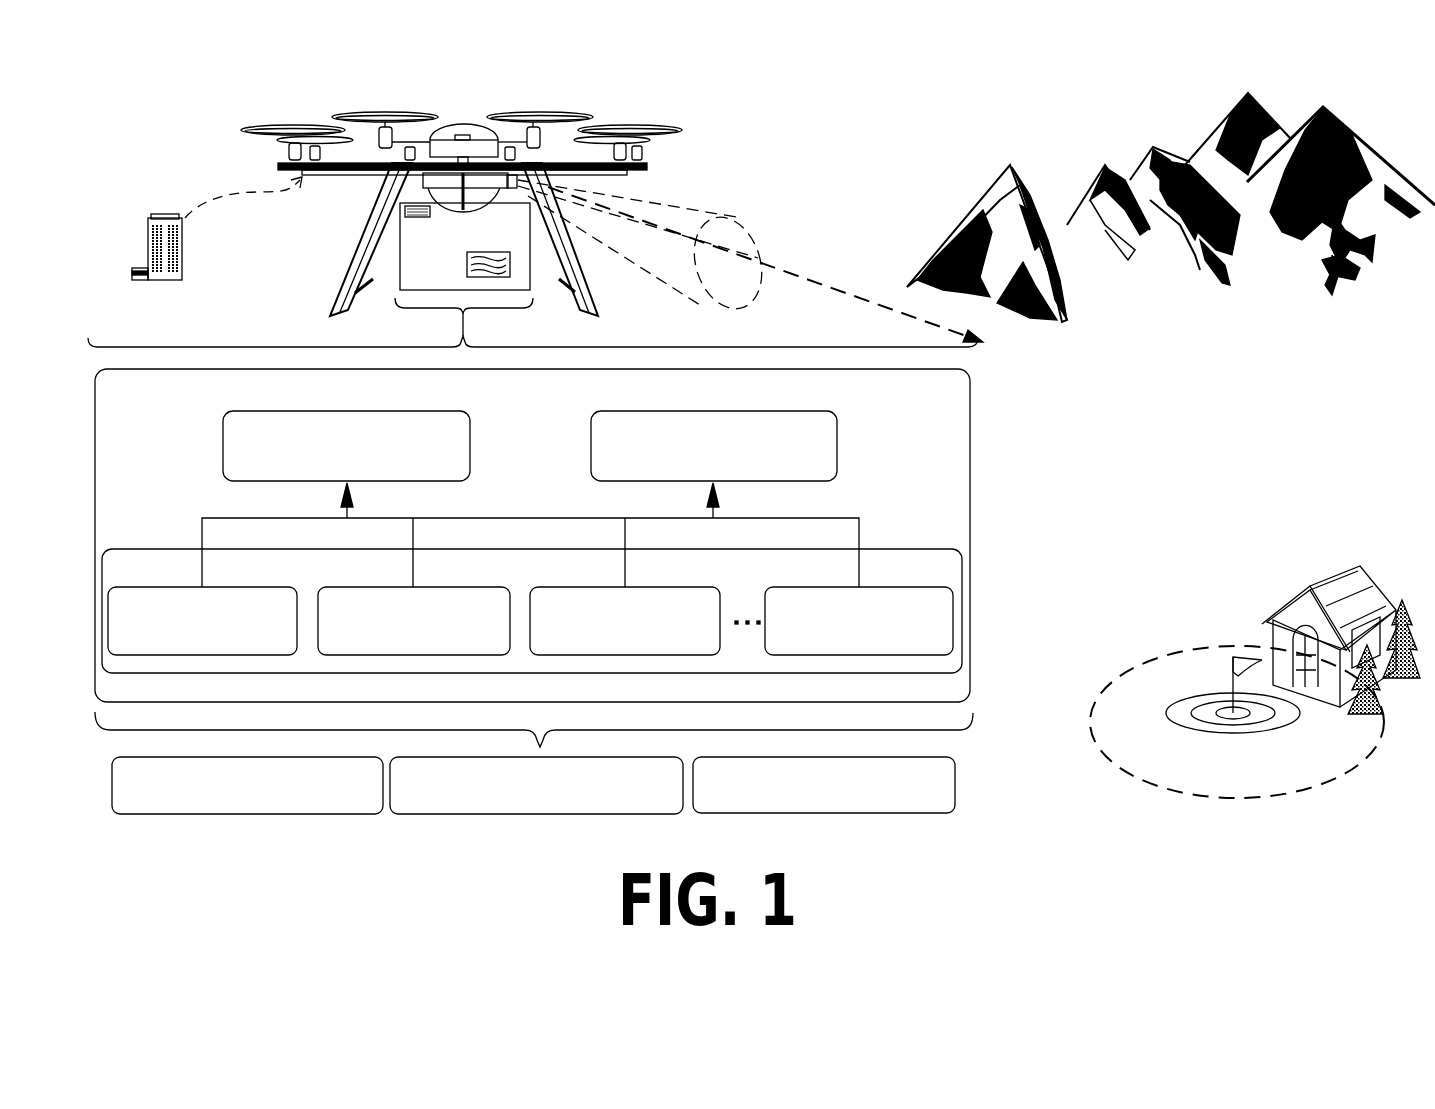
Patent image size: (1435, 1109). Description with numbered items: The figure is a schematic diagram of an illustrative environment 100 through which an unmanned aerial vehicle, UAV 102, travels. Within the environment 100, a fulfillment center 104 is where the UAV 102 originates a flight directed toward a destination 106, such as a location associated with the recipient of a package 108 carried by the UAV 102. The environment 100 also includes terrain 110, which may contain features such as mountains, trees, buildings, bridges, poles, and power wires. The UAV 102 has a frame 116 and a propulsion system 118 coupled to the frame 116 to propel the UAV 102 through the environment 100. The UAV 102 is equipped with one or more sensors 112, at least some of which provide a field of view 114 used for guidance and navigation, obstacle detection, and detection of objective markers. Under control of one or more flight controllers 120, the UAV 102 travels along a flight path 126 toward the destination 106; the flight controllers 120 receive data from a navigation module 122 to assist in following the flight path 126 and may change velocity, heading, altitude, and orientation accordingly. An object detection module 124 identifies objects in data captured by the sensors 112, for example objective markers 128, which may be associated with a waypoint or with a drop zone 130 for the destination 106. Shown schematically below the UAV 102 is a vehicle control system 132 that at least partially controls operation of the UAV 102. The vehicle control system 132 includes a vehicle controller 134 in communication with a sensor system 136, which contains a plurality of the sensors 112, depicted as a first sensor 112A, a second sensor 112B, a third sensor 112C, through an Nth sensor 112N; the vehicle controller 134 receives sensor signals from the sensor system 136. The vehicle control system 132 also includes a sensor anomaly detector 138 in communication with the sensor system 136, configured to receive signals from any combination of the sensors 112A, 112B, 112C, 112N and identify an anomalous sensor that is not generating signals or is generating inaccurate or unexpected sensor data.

The environment 100 is at (222, 124).
The unmanned aerial vehicle 102 is at (447, 138).
The fulfillment center 104 is at (208, 333).
The destination 106 is at (1103, 690).
The package 108 is at (415, 268).
The terrain 110 is at (1108, 130).
The sensors 112 is at (512, 190).
The first sensor 112A is at (223, 641).
The second sensor 112B is at (435, 641).
The third sensor 112C is at (647, 641).
The Nth sensor 112N is at (880, 641).
The field of view 114 is at (750, 220).
The frame 116 is at (388, 190).
The propulsion system 118 is at (537, 127).
The flight controllers 120 is at (264, 806).
The navigation module 122 is at (554, 806).
The object detection module 124 is at (840, 806).
The flight path 126 is at (790, 267).
The objective markers 128 is at (1243, 656).
The drop zone 130 is at (1257, 733).
The vehicle control system 132 is at (376, 398).
The vehicle controller 134 is at (458, 455).
The sensor system 136 is at (608, 576).
The sensor anomaly detector 138 is at (777, 466).